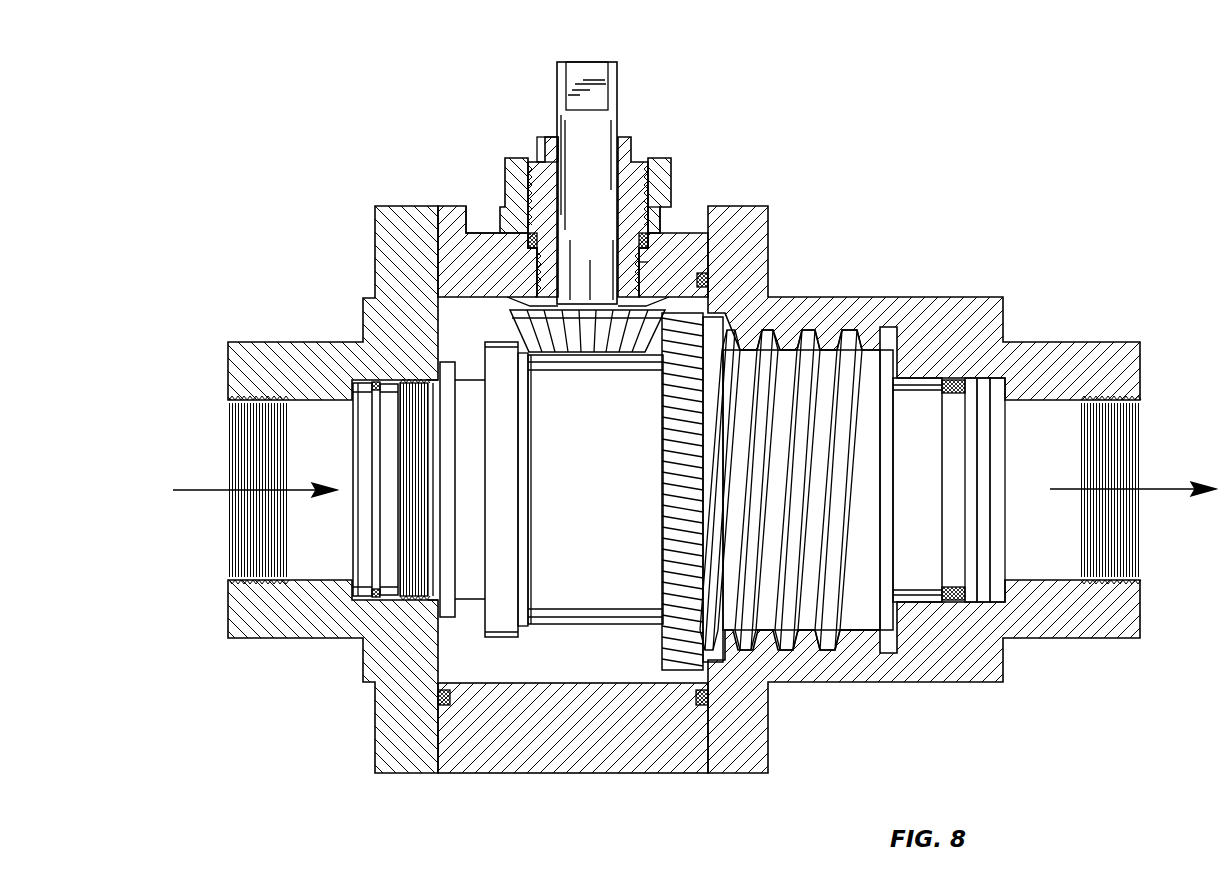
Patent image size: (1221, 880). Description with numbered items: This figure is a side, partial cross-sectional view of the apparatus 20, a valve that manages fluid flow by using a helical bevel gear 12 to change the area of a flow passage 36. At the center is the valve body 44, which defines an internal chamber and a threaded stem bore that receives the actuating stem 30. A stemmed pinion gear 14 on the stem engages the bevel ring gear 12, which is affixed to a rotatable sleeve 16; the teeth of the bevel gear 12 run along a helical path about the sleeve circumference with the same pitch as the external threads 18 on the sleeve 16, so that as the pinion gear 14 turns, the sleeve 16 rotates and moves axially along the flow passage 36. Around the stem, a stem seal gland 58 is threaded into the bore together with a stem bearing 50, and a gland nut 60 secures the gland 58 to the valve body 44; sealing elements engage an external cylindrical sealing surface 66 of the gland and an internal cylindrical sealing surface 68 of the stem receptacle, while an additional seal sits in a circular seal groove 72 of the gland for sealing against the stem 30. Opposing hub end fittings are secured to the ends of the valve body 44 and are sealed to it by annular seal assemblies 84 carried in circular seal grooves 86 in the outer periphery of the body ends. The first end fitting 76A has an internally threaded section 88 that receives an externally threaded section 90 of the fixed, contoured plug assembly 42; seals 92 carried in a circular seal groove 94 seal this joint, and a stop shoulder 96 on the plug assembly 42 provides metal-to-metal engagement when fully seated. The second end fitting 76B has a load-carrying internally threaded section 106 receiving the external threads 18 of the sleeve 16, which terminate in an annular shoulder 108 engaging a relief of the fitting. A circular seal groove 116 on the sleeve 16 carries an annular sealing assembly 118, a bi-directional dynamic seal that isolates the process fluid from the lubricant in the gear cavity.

The helical bevel gear 12 is at (650, 645).
The stemmed pinion gear 14 is at (610, 340).
The rotatable sleeve 16 is at (574, 508).
The external threads 18 is at (823, 312).
The apparatus 20 is at (998, 128).
The actuating stem 30 is at (590, 70).
The flow passage 36 is at (200, 490).
The plug assembly 42 is at (485, 560).
The valve body 44 is at (447, 232).
The stem bearing 50 is at (643, 234).
The stem seal gland 58 is at (638, 153).
The gland nut 60 is at (662, 175).
The external cylindrical sealing surface 66 is at (492, 236).
The internal cylindrical sealing surface 68 is at (650, 260).
The circular seal groove 72 is at (548, 167).
The first end fitting 76A is at (380, 712).
The second end fitting 76B is at (1003, 660).
The seal assemblies 84 is at (708, 280).
The circular seal grooves 86 is at (443, 275).
The internally threaded section 88 is at (413, 377).
The externally threaded section 90 is at (407, 600).
The seal assemblies 92 is at (373, 600).
The circular seal groove 94 is at (375, 438).
The stop shoulder 96 is at (448, 613).
The internally threaded section 106 is at (808, 638).
The annular shoulder 108 is at (767, 717).
The circular seal groove 116 is at (967, 451).
The annular sealing assembly 118 is at (963, 600).